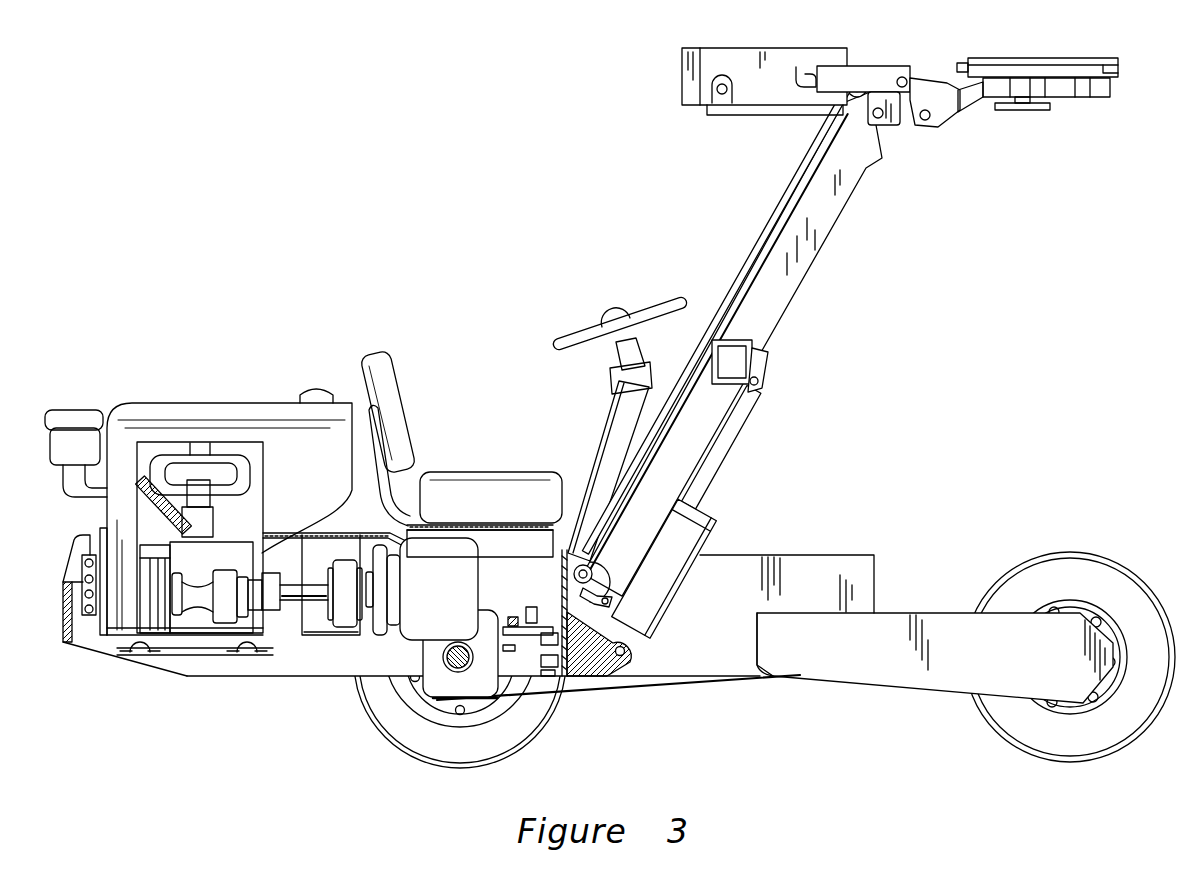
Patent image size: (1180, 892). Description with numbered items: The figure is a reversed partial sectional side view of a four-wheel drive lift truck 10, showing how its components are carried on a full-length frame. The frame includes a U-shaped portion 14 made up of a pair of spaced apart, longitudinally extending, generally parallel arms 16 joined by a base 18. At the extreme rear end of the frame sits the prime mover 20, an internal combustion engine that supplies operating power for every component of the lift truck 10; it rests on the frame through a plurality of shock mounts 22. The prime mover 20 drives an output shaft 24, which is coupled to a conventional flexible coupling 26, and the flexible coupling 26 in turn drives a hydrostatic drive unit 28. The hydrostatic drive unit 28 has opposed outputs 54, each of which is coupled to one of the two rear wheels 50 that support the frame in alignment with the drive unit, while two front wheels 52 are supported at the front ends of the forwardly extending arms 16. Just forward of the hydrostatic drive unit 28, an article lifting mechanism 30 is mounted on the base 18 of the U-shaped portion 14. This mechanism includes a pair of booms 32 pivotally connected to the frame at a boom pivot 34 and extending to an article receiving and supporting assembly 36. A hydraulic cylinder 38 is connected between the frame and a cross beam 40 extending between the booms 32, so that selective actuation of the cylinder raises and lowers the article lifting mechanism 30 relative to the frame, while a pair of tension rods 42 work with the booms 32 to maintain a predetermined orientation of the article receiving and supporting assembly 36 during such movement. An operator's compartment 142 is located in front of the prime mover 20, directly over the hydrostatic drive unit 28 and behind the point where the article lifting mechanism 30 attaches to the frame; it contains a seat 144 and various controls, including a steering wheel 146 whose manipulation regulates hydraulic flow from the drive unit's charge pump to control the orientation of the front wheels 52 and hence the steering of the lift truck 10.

The lift truck 10 is at (409, 285).
The U-shaped portion 14 is at (701, 626).
The arms 16 is at (619, 640).
The base 18 is at (619, 686).
The prime mover 20 is at (198, 527).
The shock mounts 22 is at (137, 652).
The output shaft 24 is at (307, 592).
The flexible coupling 26 is at (343, 620).
The hydrostatic drive unit 28 is at (493, 595).
The article lifting mechanism 30 is at (846, 321).
The booms 32 is at (800, 231).
The boom pivot 34 is at (617, 582).
The article receiving and supporting assembly 36 is at (994, 38).
The hydraulic cylinder 38 is at (693, 537).
The cross beam 40 is at (758, 352).
The tension rods 42 is at (793, 193).
The rear wheels 50 is at (498, 731).
The front wheels 52 is at (1008, 710).
The outputs 54 is at (445, 668).
The operator's compartment 142 is at (508, 358).
The seat 144 is at (509, 443).
The steering wheel 146 is at (568, 338).